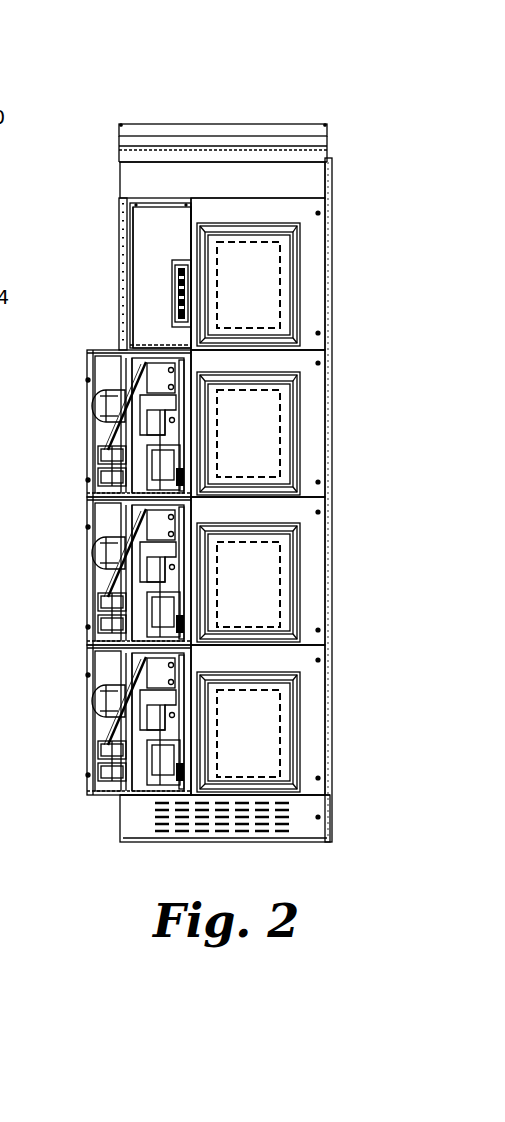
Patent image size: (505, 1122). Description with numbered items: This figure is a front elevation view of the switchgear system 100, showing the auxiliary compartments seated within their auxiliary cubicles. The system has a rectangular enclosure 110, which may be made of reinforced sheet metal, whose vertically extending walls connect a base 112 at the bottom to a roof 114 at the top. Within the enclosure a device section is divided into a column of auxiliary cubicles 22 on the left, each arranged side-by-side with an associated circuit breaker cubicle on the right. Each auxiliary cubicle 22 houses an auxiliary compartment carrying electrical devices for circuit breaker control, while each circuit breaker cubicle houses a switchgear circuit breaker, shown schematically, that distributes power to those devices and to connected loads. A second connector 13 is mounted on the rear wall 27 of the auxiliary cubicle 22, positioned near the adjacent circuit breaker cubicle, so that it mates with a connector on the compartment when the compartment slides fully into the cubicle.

The switchgear system 100 is at (331, 76).
The enclosure 110 is at (325, 181).
The roof 114 is at (203, 197).
The auxiliary cubicle 22 is at (147, 235).
The rear wall 27 is at (140, 292).
The second connector 13 is at (172, 313).
The base 112 is at (168, 845).